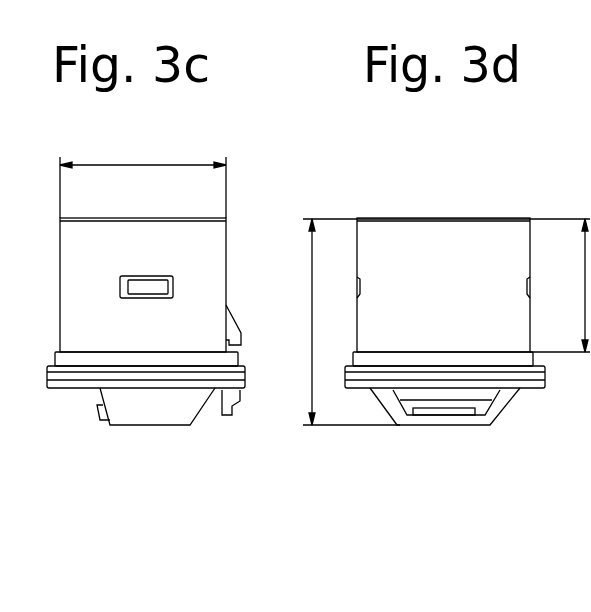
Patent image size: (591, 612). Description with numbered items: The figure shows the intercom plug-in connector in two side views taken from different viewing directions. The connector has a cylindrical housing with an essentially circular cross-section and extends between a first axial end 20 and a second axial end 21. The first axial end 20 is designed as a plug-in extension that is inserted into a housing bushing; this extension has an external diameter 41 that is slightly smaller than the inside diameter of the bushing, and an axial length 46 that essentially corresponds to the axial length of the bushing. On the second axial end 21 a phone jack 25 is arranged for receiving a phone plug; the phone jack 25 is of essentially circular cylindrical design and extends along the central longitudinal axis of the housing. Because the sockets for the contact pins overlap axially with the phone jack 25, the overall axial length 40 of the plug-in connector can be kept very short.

In FIG. 3C, the first axial end 20 is at (194, 216).
In FIG. 3C, the external diameter 41 is at (165, 164).
In FIG. 3C, the second axial end 21 is at (165, 432).
In FIG. 3D, the overall axial length 40 is at (312, 298).
In FIG. 3D, the axial length 46 is at (585, 272).
In FIG. 3D, the phone jack 25 is at (443, 432).